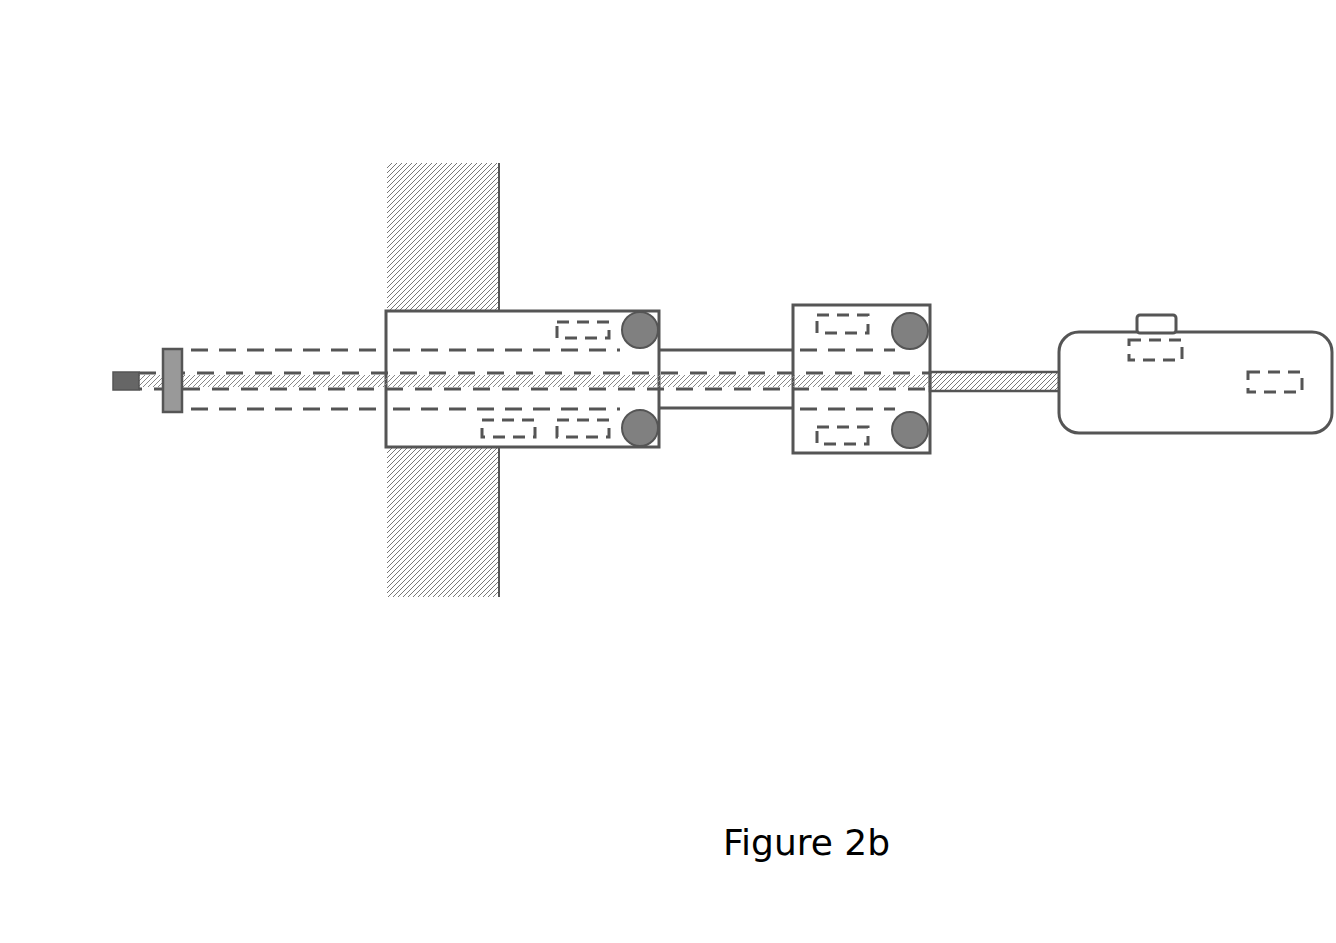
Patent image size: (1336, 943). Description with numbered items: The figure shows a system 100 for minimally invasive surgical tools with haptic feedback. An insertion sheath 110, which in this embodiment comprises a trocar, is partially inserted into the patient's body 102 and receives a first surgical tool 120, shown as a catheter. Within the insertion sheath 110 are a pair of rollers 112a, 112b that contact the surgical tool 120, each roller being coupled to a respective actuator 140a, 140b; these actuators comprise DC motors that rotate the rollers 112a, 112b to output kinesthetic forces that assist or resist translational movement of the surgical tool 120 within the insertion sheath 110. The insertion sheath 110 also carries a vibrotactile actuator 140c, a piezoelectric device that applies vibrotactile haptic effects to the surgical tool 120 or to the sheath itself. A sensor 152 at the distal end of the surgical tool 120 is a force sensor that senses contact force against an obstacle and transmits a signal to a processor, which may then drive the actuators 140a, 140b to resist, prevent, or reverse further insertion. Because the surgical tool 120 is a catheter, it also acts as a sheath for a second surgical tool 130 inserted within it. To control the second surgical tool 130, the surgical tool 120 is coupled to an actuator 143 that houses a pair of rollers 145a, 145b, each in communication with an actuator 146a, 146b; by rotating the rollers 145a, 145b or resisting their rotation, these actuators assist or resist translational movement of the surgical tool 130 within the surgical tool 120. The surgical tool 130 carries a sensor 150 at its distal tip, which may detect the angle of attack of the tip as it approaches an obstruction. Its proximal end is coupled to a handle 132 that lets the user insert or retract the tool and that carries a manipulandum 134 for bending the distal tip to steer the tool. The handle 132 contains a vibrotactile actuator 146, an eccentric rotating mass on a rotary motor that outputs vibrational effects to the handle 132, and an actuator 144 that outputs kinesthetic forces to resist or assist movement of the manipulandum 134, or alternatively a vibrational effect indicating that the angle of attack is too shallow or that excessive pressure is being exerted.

The system 100 is at (723, 313).
The patient's body 102 is at (452, 136).
The insertion sheath 110 is at (520, 310).
The roller 112a is at (637, 312).
The roller 112b is at (638, 447).
The first surgical tool 120 is at (727, 350).
The second surgical tool 130 is at (995, 372).
The handle 132 is at (1215, 398).
The manipulandum 134 is at (1157, 315).
The actuator 140a is at (583, 322).
The actuator 140b is at (582, 437).
The vibrotactile actuator 140c is at (508, 437).
The actuator 143 is at (862, 303).
The actuator 144 is at (1182, 352).
The roller 145a is at (910, 312).
The roller 145b is at (910, 450).
The vibrotactile actuator 146 is at (1275, 370).
The actuator 146a is at (842, 315).
The actuator 146b is at (842, 445).
The sensor 150 is at (125, 375).
The sensor 152 is at (170, 412).